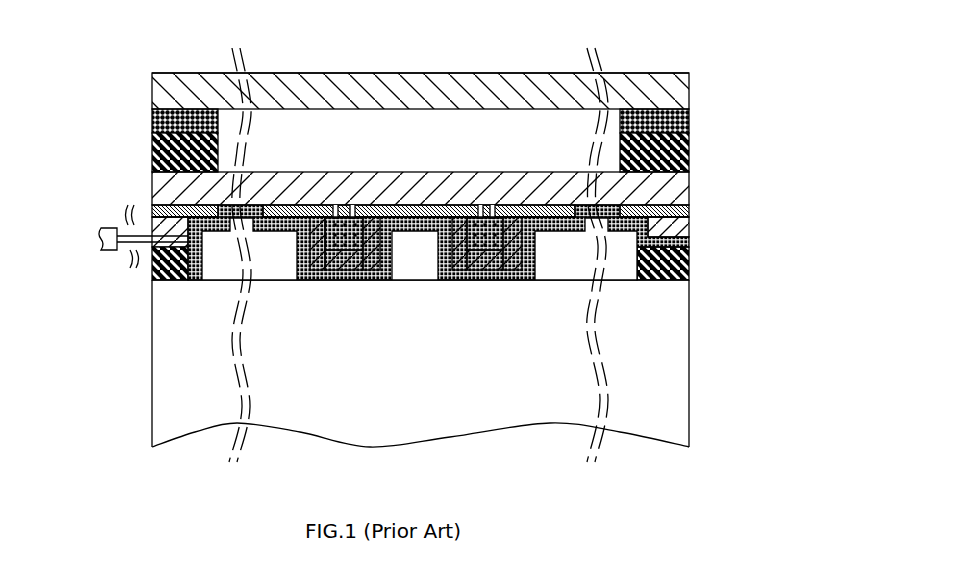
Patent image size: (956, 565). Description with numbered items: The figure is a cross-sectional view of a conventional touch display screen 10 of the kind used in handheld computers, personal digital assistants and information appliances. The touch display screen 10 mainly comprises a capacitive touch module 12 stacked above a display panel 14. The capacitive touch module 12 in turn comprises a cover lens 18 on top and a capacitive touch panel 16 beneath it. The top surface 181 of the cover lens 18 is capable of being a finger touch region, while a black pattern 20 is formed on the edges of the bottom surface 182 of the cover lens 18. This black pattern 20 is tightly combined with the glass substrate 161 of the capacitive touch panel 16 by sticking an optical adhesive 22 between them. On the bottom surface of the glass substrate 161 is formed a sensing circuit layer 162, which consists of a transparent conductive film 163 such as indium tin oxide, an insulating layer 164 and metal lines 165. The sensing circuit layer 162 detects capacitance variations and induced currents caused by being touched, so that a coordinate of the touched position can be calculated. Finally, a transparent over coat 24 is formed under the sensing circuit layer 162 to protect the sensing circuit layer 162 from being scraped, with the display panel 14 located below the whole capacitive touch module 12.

The touch display screen 10 is at (124, 72).
The capacitive touch module 12 is at (706, 74).
The display panel 14 is at (689, 418).
The capacitive touch panel 16 is at (90, 170).
The cover lens 18 is at (610, 86).
The top surface 181 is at (496, 73).
The bottom surface 182 is at (152, 118).
The black pattern 20 is at (662, 112).
The optical adhesive 22 is at (152, 152).
The transparent over coat 24 is at (483, 278).
The glass substrate 161 is at (565, 190).
The sensing circuit layer 162 is at (760, 292).
The transparent conductive film 163 is at (688, 215).
The insulating layer 164 is at (492, 242).
The metal lines 165 is at (498, 265).